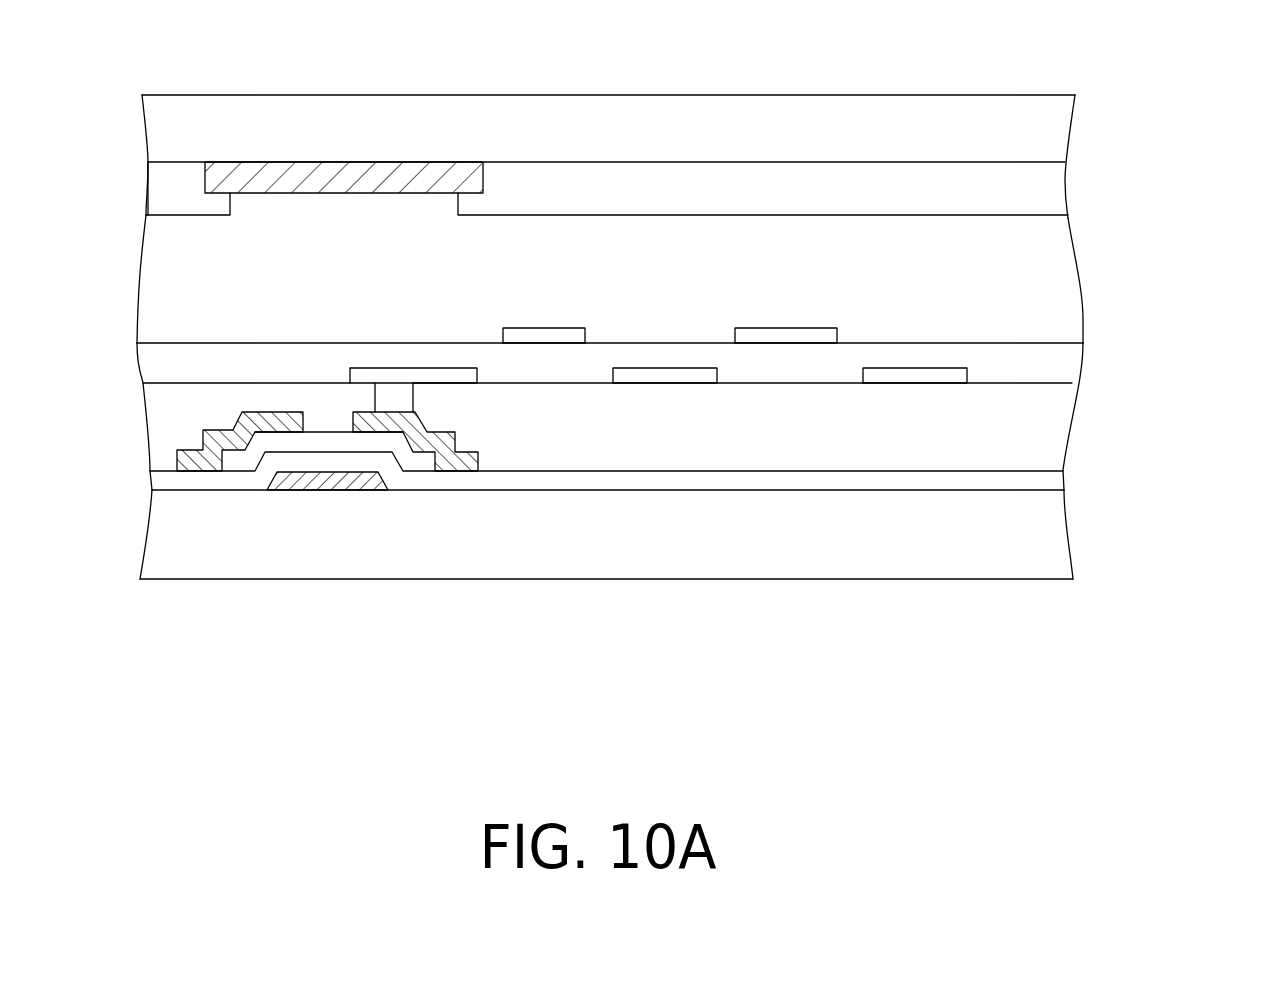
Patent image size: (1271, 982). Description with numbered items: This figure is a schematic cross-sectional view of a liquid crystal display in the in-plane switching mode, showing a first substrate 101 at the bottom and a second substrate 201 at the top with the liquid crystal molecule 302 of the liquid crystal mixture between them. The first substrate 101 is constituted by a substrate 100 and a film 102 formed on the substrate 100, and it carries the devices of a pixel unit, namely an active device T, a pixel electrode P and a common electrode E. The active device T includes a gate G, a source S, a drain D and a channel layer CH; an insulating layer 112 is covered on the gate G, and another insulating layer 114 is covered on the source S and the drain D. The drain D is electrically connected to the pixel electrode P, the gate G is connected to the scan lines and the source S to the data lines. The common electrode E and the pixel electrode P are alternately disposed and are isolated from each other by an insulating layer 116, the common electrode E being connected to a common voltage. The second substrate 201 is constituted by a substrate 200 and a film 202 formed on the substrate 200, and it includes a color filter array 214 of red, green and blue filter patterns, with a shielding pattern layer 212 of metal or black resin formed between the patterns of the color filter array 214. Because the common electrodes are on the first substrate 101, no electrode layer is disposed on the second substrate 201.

The substrate 100 is at (1048, 531).
The first substrate 101 is at (1192, 400).
The film 102 is at (1103, 347).
The insulating layer 112 is at (157, 480).
The insulating layer 114 is at (157, 413).
The insulating layer 116 is at (153, 363).
The substrate 200 is at (1048, 122).
The second substrate 201 is at (1192, 93).
The film 202 is at (1103, 162).
The shielding pattern layer 212 is at (310, 175).
The color filter array 214 is at (165, 182).
The liquid crystal molecule 302 is at (1048, 288).
The pixel electrode P is at (397, 373).
The common electrode E is at (543, 333).
The source S is at (203, 460).
The drain D is at (460, 467).
The gate G is at (338, 492).
The channel layer CH is at (285, 442).
The active device T is at (187, 672).